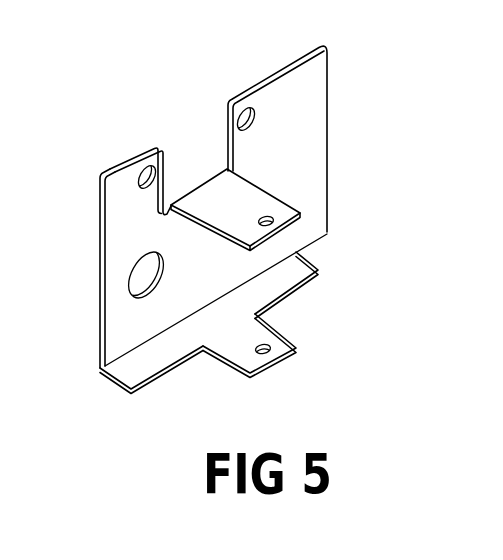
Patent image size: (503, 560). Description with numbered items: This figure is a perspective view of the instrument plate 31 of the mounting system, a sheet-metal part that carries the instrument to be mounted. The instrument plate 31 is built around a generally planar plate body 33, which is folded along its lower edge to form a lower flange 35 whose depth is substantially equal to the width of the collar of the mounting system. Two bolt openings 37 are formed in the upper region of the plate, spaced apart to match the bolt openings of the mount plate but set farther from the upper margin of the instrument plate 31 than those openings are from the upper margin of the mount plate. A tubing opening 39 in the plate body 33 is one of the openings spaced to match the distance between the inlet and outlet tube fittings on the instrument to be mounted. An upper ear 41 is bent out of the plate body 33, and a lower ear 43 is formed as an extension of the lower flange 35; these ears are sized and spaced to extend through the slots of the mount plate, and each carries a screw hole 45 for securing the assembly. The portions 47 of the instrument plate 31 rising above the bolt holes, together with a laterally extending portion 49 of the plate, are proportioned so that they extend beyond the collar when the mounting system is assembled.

The instrument plate 31 is at (100, 370).
The plate body 33 is at (97, 338).
The lower flange 35 is at (320, 263).
The bolt openings 37 is at (243, 106).
The tubing openings 39 is at (131, 265).
The upper ear 41 is at (277, 191).
The lower ear 43 is at (290, 358).
The screw holes 45 is at (272, 217).
The portions above the bolt holes 47 is at (100, 175).
The laterally extending portion 49 is at (306, 100).